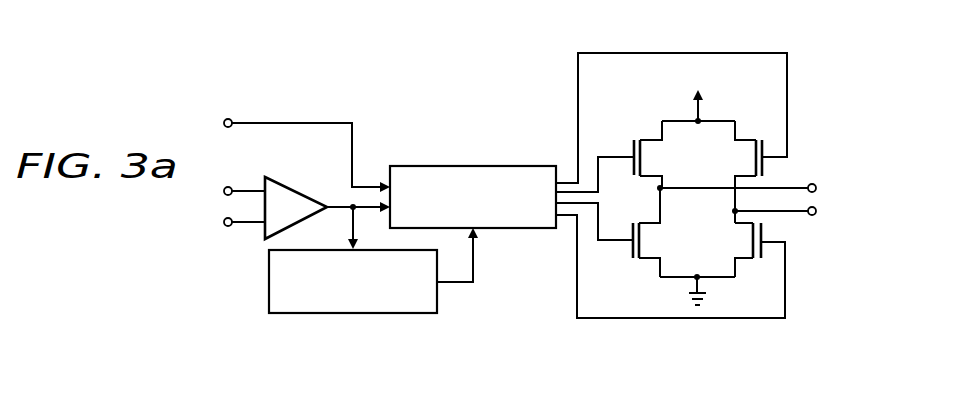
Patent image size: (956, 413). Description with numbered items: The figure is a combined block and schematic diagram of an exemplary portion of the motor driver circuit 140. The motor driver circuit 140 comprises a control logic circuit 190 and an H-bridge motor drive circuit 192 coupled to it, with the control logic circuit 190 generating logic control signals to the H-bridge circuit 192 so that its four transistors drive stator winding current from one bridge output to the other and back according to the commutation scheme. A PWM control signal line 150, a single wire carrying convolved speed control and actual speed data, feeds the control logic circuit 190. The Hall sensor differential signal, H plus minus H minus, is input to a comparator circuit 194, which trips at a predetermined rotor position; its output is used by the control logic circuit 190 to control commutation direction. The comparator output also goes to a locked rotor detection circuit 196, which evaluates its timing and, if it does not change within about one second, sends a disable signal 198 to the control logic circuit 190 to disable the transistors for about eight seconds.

The motor driver circuit 140 is at (403, 87).
The PWM control signal line 150 is at (288, 122).
The control logic circuit 190 is at (474, 165).
The H-bridge motor drive circuit 192 is at (804, 78).
The comparator circuit 194 is at (297, 192).
The locked rotor detection circuit 196 is at (268, 280).
The disable signal 198 is at (474, 258).